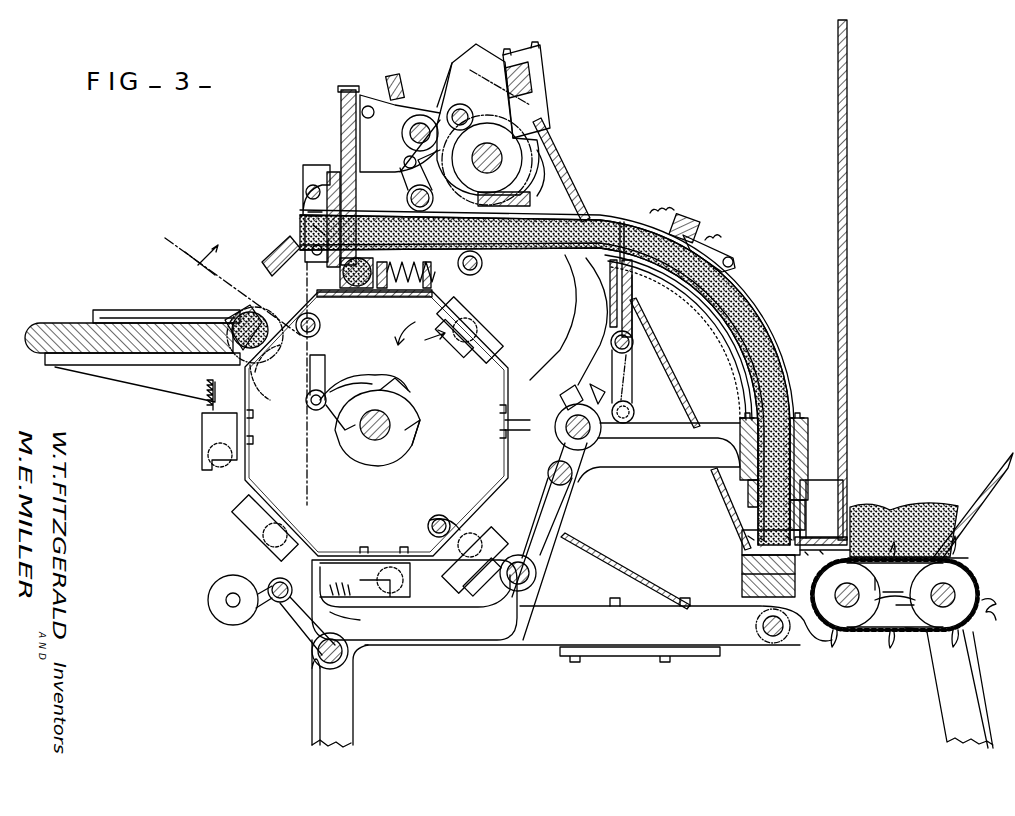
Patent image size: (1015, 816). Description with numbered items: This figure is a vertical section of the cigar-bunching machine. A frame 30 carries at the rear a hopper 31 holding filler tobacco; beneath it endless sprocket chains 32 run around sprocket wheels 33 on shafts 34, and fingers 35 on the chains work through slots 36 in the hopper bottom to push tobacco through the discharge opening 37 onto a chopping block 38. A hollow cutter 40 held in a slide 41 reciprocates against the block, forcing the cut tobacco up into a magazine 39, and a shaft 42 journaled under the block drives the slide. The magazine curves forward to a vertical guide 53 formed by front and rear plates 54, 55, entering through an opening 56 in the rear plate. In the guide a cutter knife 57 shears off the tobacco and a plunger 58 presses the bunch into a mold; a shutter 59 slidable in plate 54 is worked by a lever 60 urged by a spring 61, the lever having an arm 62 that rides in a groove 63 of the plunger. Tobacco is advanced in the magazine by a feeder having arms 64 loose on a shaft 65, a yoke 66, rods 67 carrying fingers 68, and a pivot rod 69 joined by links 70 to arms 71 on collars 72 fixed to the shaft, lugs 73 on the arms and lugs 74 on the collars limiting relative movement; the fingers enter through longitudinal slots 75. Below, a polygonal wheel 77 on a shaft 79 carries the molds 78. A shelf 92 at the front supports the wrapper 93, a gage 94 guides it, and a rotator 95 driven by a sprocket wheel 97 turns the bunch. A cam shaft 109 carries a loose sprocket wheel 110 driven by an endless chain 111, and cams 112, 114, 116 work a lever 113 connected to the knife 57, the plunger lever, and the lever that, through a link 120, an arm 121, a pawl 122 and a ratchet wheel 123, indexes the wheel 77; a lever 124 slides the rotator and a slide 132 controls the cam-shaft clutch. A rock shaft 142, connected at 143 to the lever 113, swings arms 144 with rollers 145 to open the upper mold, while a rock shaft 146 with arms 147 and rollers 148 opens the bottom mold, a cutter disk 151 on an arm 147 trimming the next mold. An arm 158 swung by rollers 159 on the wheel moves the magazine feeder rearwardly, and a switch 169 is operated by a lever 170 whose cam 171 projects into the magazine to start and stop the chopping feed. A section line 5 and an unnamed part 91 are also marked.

The section line 5 is at (232, 310).
The frame 30 is at (605, 647).
The hopper 31 is at (838, 297).
The endless sprocket chains 32 is at (872, 632).
The sprocket wheels 33 is at (872, 608).
The shafts 34 is at (952, 590).
The outstanding fingers 35 is at (962, 636).
The slots 36 is at (958, 555).
The discharge slot or opening 37 is at (822, 537).
The chopping block 38 is at (742, 564).
The magazine 39 is at (780, 355).
The chopping knife or cutter 40 is at (742, 522).
The slide 41 is at (742, 494).
The shaft 42 is at (780, 634).
The vertical guide 53 is at (312, 166).
The front plate 54 is at (305, 170).
The rear plate 55 is at (375, 120).
The opening 56 is at (409, 180).
The cutter knife or blade 57 is at (348, 88).
The plunger 58 is at (340, 100).
The shutter 59 is at (305, 232).
The lever 60 is at (306, 192).
The spring 61 is at (306, 213).
The arm 62 is at (330, 170).
The groove 63 is at (340, 128).
The arms 64 is at (590, 330).
The shaft 65 is at (582, 445).
The yoke 66 is at (634, 292).
The rods 67 is at (634, 322).
The pins or fingers 68 is at (622, 222).
The pivot rod 69 is at (633, 343).
The links 70 is at (633, 385).
The arms 71 is at (605, 437).
The collars 72 is at (585, 455).
The lugs 73 is at (635, 409).
The lugs 74 is at (578, 396).
The longitudinal slots 75 is at (722, 322).
The polygonal wheel or carrier 77 is at (366, 411).
The molds 78 is at (420, 336).
The shaft 79 is at (373, 440).
The spring 91 is at (386, 277).
The shelf or board 92 is at (55, 330).
The wrapper 93 is at (150, 316).
The gage 94 is at (108, 314).
The rotator 95 is at (258, 378).
The sprocket wheel 97 is at (230, 318).
The cam shaft 109 is at (540, 145).
The sprocket wheel 110 is at (545, 175).
The endless sprocket chain 111 is at (685, 391).
The cam 112 is at (530, 199).
The lever 113 is at (410, 115).
The cam 114 is at (545, 142).
The cam 116 is at (473, 158).
The pawl 120 is at (322, 360).
The arm 121 is at (340, 430).
The dog or pawl 122 is at (372, 376).
The ratchet wheel 123 is at (412, 446).
The lever 124 is at (266, 266).
The slide 132 is at (540, 80).
The rock shaft 142 is at (445, 200).
The pin and slot connection 143 is at (487, 157).
The arms 144 is at (477, 272).
The rollers 145 is at (490, 250).
The rock shaft 146 is at (316, 658).
The arms 147 is at (300, 630).
The rollers 148 is at (270, 582).
The cutter disk 151 is at (230, 612).
The arm 158 is at (500, 573).
The rollers 159 is at (428, 527).
The switch 169 is at (686, 216).
The lever 170 is at (725, 240).
The cam 171 is at (733, 258).